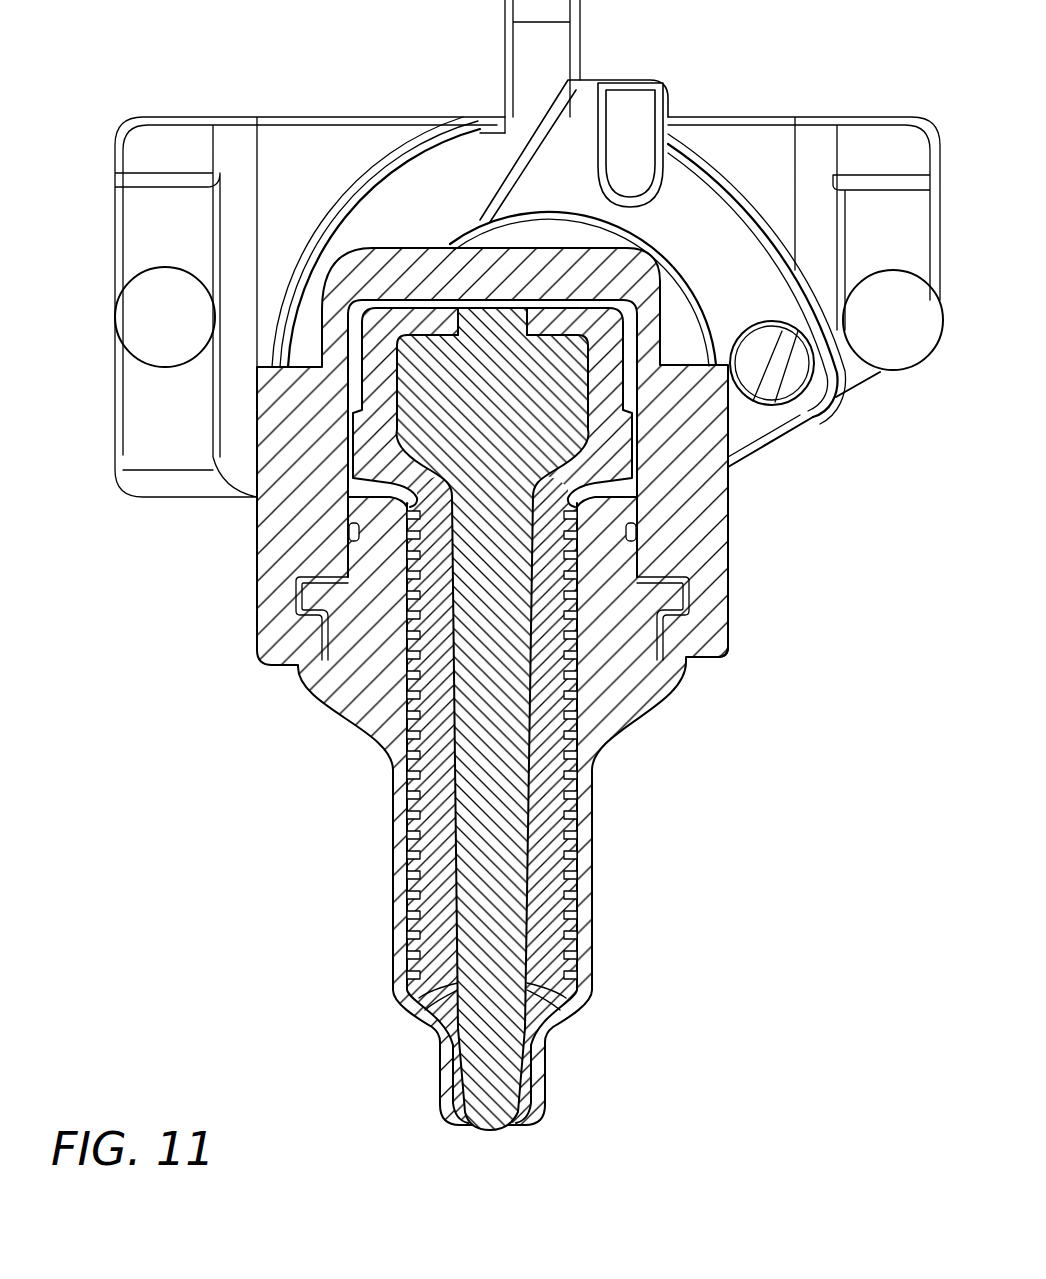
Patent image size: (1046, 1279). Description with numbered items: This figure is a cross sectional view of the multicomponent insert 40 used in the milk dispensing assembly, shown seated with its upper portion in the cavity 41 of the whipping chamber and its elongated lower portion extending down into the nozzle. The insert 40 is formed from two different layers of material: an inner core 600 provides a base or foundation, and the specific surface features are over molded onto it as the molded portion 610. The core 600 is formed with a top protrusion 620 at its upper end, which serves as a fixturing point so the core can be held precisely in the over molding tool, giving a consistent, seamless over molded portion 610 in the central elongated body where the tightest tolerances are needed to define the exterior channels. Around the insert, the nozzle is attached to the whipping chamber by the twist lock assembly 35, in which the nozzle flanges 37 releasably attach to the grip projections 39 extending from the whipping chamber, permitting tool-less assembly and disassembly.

The twist lock assembly 35 is at (757, 636).
The flanges 37 is at (672, 600).
The grip projections 39 is at (717, 648).
The insert 40 is at (356, 850).
The cavity 41 is at (358, 327).
The inner core 600 is at (513, 917).
The molded portion 610 is at (553, 950).
The top protrusion 620 is at (453, 313).